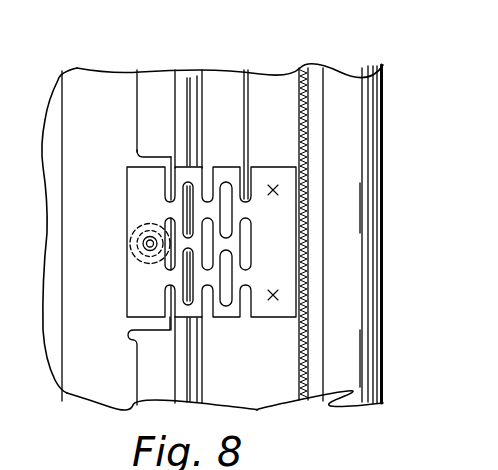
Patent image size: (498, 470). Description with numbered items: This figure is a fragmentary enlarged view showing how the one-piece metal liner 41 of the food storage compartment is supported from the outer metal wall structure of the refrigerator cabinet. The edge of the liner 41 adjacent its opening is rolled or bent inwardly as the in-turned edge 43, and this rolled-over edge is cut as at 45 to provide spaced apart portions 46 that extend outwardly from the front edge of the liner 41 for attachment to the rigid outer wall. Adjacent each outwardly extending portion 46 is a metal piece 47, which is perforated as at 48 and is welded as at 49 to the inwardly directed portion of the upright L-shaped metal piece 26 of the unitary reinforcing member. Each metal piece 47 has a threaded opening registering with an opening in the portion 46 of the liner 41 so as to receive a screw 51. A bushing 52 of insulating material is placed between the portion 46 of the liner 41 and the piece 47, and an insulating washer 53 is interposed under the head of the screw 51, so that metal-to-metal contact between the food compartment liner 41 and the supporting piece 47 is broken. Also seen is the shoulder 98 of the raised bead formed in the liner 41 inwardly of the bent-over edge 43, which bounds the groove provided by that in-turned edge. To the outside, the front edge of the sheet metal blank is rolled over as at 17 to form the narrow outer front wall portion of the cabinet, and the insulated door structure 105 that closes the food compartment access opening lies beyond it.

The metal liner 41 is at (82, 97).
The cut 45 is at (132, 157).
The outwardly extending portion 46 is at (152, 157).
The metal piece 47 is at (221, 168).
The perforations 48 is at (228, 279).
The weld 49 is at (275, 183).
The upright L-shaped metal piece 26 is at (272, 82).
The rolled-over front edge 17 is at (312, 87).
The insulated door structure 105 is at (352, 85).
The screw 51 is at (146, 245).
The bushing 52 is at (135, 222).
The insulating washer 53 is at (138, 261).
The shoulder 98 is at (57, 323).
The inwardly bent edge 43 is at (147, 366).